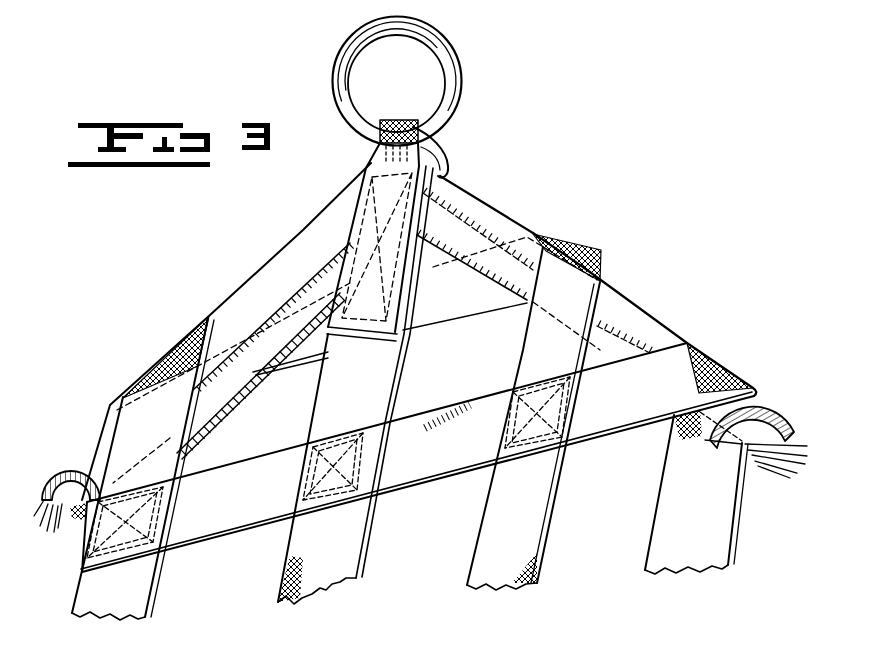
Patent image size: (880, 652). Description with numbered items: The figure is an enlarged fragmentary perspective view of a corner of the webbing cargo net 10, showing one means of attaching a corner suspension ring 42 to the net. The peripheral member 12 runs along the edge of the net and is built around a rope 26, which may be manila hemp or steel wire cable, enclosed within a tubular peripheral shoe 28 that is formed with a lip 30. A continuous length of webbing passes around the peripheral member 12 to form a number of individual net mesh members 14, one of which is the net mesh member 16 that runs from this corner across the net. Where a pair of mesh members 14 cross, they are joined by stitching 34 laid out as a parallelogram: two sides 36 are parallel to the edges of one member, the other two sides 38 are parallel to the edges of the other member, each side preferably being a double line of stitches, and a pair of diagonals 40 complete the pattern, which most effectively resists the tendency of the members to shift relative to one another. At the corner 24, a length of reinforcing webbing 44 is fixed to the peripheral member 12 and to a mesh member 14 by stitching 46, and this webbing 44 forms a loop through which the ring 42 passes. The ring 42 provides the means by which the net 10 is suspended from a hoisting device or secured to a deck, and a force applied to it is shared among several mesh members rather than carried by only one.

The webbing cargo net 10 is at (654, 308).
The peripheral member 12 is at (498, 222).
The net mesh members 14 is at (426, 334).
The net mesh member 16 is at (560, 342).
The corner 24 is at (452, 156).
The rope 26 is at (52, 525).
The tubular peripheral shoe 28 is at (247, 288).
The lip 30 is at (227, 398).
The stitching 34 is at (378, 470).
The sides 36 is at (155, 460).
The sides 38 is at (330, 446).
The diagonals 40 is at (368, 450).
The corner suspension rings 42 is at (460, 82).
The reinforcing webbing 44 is at (343, 268).
The stitching 46 is at (397, 286).